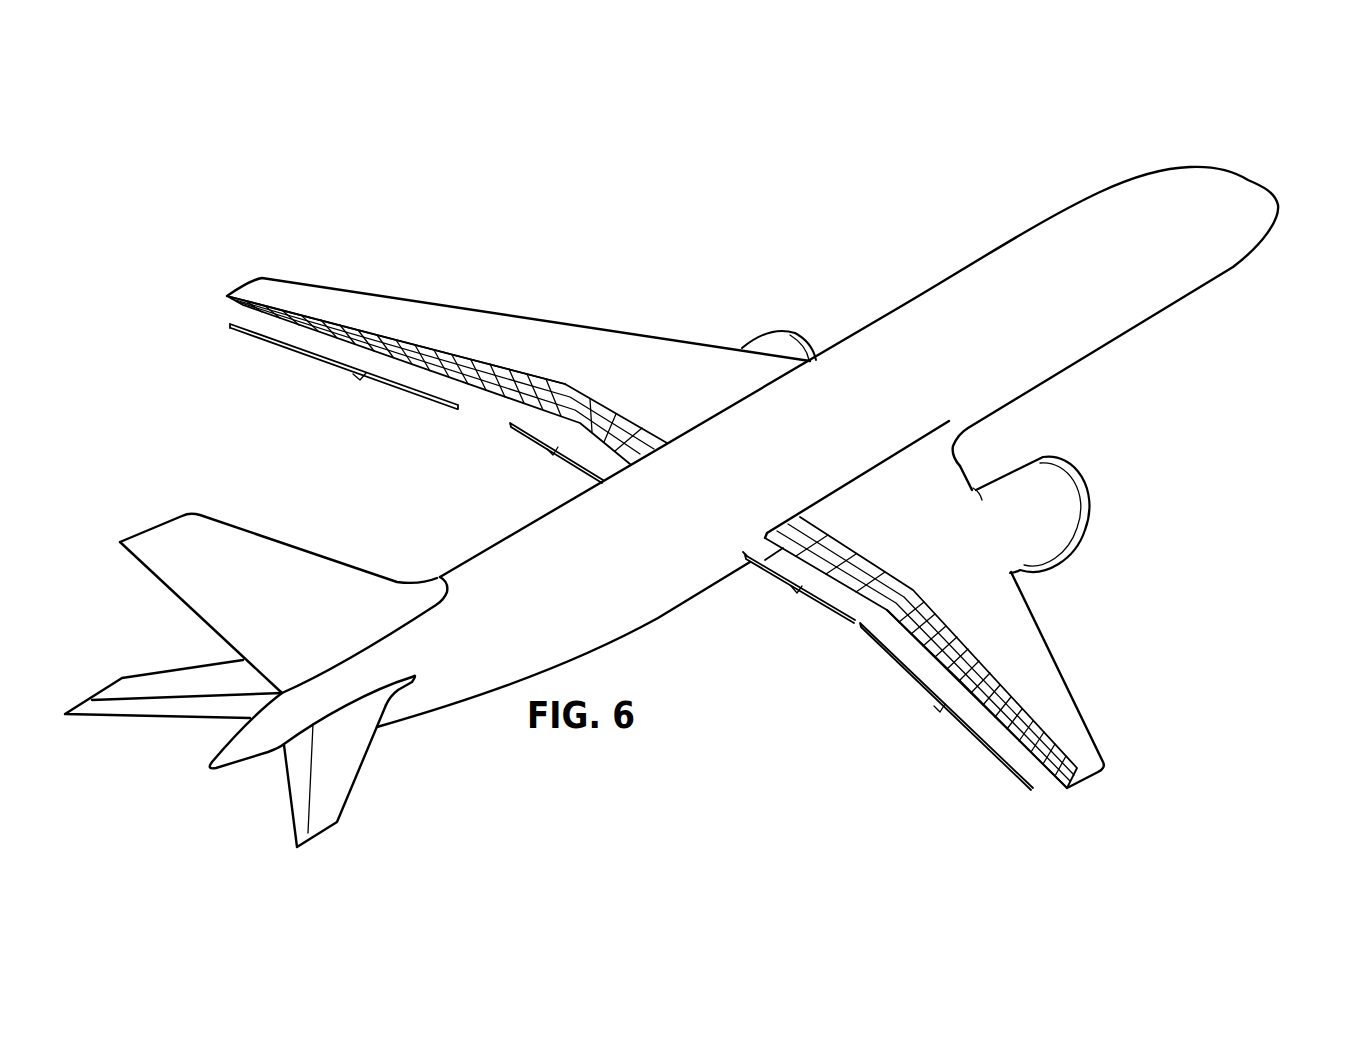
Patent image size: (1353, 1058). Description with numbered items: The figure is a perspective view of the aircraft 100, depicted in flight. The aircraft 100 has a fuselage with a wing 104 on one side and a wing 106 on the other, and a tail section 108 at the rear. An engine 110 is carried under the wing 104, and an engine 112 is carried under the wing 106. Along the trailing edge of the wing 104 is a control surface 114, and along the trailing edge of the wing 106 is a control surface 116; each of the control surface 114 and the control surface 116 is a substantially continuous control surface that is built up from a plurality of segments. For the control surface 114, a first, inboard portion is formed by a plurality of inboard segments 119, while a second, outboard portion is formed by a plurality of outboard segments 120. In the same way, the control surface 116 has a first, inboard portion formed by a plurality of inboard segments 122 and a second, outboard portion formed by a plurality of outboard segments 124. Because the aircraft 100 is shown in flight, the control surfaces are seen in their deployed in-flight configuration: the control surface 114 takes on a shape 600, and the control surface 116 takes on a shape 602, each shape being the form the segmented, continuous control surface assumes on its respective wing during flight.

The aircraft 100 is at (1277, 157).
The wing 104 is at (552, 303).
The wing 106 is at (1064, 646).
The tail section 108 is at (270, 797).
The engine 110 is at (808, 316).
The engine 112 is at (1098, 486).
The control surface 114 is at (480, 400).
The control surface 116 is at (898, 636).
The inboard segments 119 is at (552, 453).
The outboard segments 120 is at (360, 381).
The inboard segments 122 is at (795, 593).
The outboard segments 124 is at (939, 709).
The shape 600 is at (309, 341).
The shape 602 is at (1005, 746).